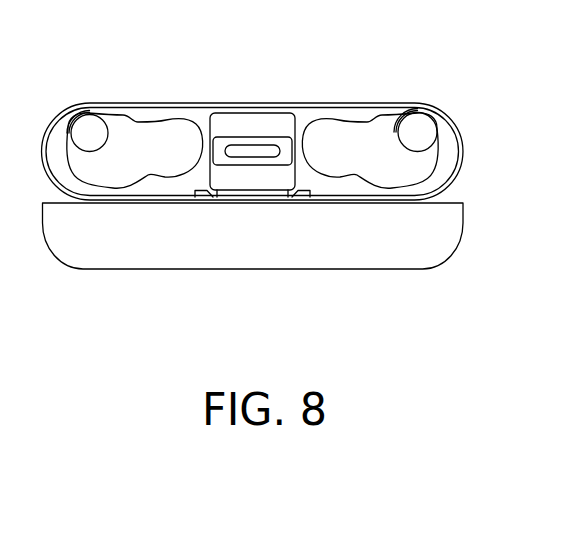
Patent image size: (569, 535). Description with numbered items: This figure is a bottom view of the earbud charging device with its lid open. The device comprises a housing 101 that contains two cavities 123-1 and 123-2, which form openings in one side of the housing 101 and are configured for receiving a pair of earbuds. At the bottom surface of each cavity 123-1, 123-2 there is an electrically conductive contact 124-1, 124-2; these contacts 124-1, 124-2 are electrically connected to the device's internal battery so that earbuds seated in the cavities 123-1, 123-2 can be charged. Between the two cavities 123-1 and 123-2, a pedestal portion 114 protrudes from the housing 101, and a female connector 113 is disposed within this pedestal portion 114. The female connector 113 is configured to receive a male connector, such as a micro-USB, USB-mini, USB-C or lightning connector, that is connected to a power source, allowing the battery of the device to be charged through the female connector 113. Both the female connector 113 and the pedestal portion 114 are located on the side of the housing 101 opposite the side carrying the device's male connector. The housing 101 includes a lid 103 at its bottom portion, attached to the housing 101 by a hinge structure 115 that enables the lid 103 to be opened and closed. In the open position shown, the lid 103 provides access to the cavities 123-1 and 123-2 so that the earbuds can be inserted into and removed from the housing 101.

The housing 101 is at (464, 156).
The lid 103 is at (463, 222).
The female connector 113 is at (272, 144).
The pedestal portion 114 is at (222, 136).
The hinge structure 115 is at (235, 193).
The first cavity 123-1 is at (131, 120).
The second cavity 123-2 is at (378, 117).
The first electrically conductive contact 124-1 is at (72, 118).
The second electrically conductive contact 124-2 is at (424, 120).